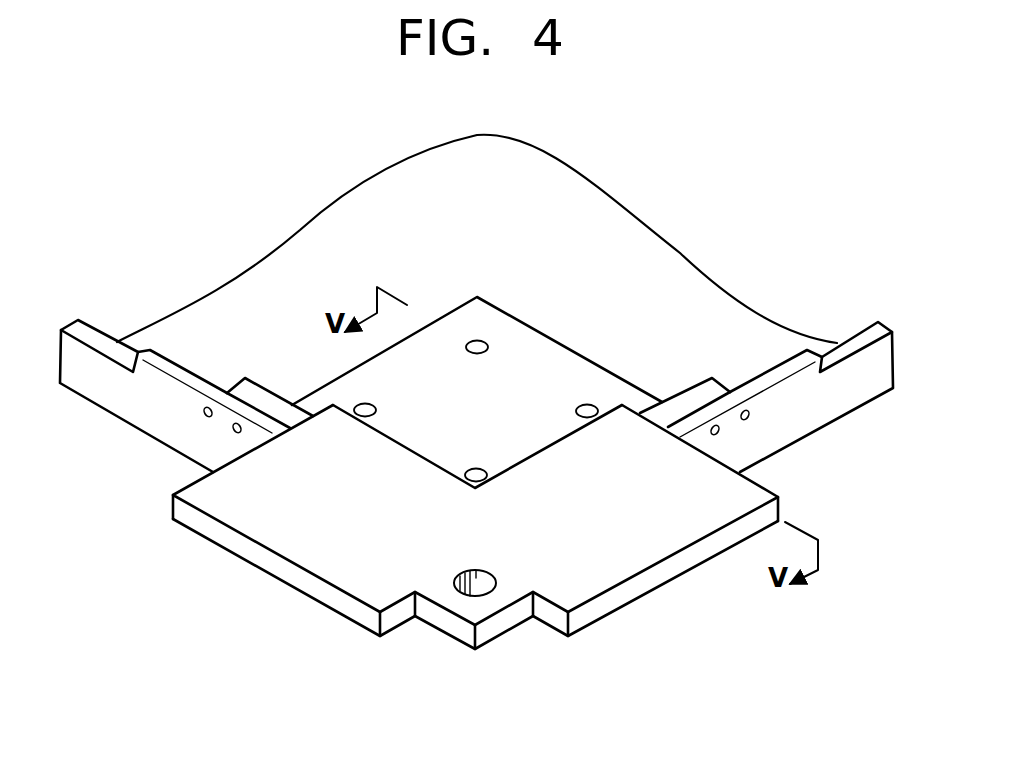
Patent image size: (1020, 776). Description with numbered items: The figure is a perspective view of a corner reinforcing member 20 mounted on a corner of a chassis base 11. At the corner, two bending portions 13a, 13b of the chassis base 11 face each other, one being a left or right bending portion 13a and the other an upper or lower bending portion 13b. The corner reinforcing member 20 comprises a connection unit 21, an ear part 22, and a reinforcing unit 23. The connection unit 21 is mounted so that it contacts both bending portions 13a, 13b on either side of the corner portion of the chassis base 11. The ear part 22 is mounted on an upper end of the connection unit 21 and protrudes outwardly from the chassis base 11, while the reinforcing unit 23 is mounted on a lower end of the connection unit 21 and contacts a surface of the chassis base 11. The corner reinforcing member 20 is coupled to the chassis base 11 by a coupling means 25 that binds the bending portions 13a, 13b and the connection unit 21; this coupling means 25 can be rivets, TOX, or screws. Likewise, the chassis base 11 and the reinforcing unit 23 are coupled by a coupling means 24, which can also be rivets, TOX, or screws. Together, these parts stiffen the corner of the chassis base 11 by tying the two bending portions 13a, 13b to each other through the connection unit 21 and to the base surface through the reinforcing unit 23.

The chassis base 11 is at (363, 227).
The bending portion 13a is at (812, 417).
The bending portion 13b is at (127, 405).
The corner reinforcing member 20 is at (692, 617).
The connection unit 21 is at (705, 395).
The ear part 22 is at (698, 518).
The reinforcing unit 23 is at (527, 358).
The coupling means 24 is at (480, 340).
The coupling means 25 is at (747, 421).